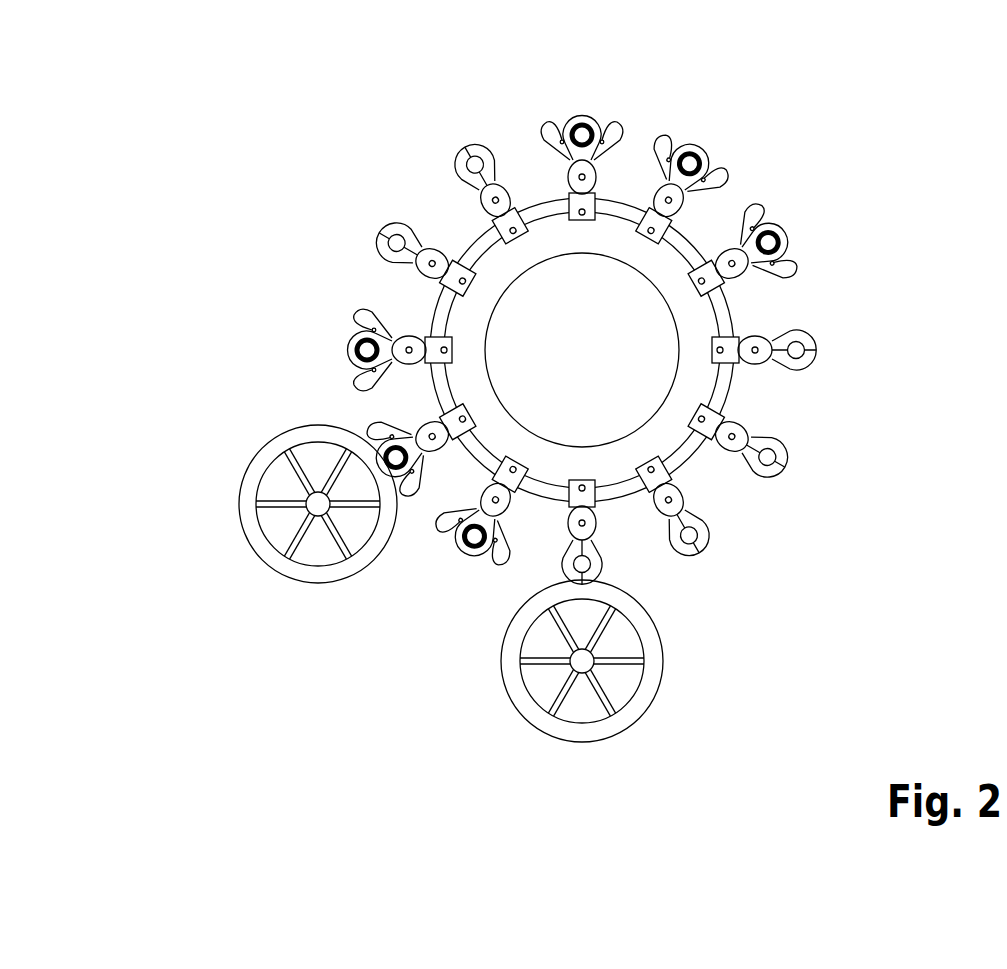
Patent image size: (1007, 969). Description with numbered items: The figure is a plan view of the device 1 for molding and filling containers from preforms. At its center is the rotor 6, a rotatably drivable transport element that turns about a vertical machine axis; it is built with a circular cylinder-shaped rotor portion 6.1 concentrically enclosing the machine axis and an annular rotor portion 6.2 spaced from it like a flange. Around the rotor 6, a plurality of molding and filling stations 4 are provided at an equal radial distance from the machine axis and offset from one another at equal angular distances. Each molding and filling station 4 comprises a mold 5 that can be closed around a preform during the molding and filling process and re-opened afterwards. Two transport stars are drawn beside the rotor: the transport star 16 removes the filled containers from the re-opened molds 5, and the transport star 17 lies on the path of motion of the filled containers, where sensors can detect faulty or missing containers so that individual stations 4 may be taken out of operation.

The device 1 is at (263, 171).
The molding and filling station 4 is at (828, 218).
The mold 5 is at (785, 277).
The rotor 6 is at (663, 372).
The rotor portion 6.1 is at (603, 255).
The rotor portion 6.2 is at (490, 250).
The transport star 16 is at (260, 468).
The transport star 17 is at (643, 687).